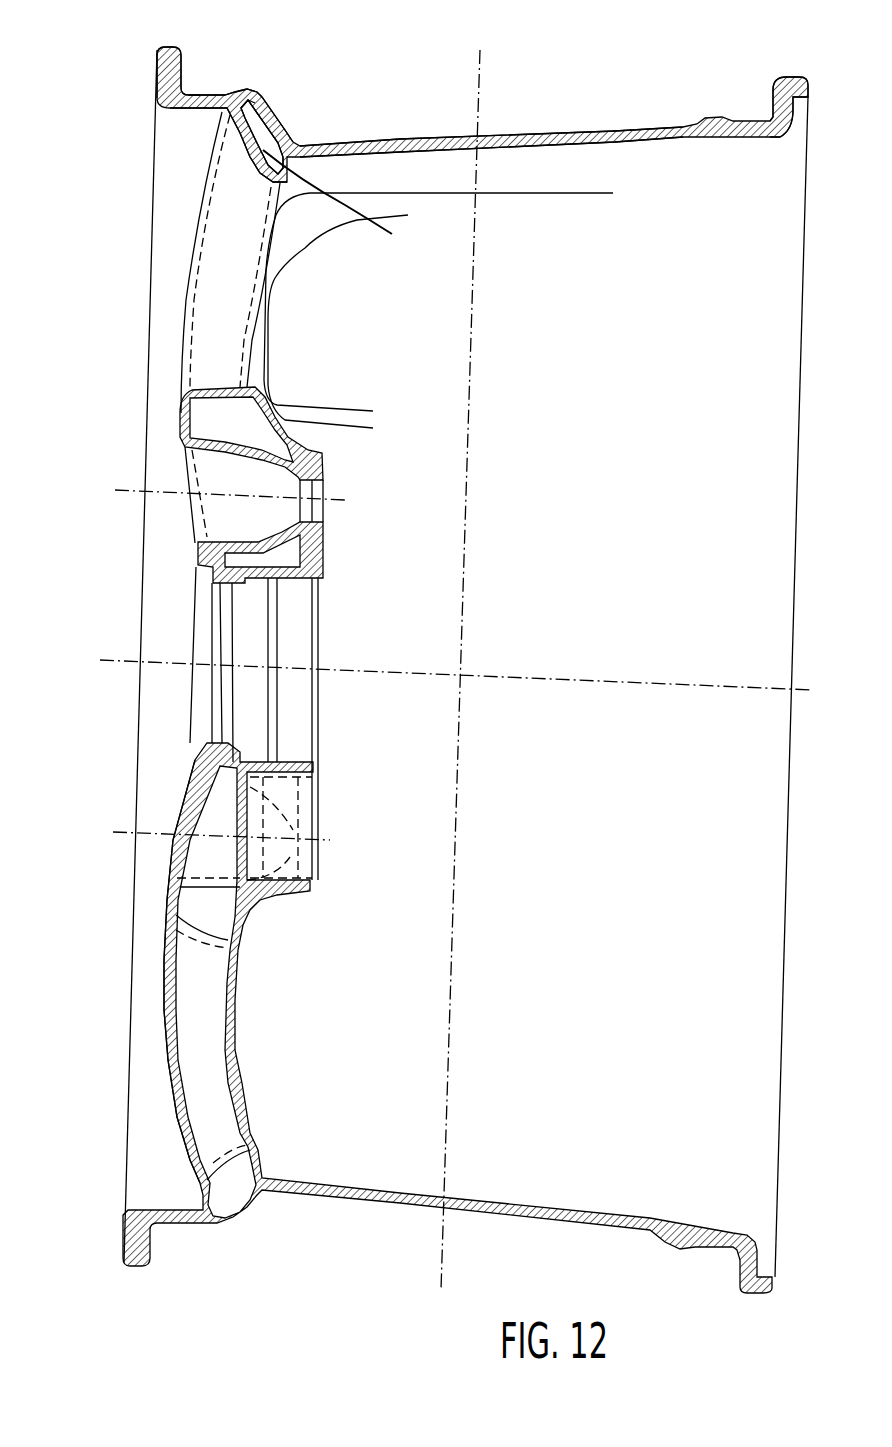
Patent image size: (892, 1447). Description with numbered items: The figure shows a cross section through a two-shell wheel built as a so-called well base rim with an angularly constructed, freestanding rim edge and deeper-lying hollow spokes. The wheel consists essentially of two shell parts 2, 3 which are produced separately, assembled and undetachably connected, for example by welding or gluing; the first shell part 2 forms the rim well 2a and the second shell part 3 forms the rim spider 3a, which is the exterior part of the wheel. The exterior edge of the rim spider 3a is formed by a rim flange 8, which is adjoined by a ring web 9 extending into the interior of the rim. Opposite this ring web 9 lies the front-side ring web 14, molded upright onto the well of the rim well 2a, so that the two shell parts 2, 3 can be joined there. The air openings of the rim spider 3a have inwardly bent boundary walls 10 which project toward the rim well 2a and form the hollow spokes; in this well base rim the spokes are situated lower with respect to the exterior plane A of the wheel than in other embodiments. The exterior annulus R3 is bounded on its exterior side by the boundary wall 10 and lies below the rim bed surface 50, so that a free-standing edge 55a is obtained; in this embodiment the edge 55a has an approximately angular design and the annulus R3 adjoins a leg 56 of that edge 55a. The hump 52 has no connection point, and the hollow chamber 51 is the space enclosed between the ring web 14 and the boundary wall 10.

The shell part 2 is at (549, 96).
The rim well 2a is at (615, 130).
The well surface 50 is at (422, 136).
The rim flange 8 is at (160, 48).
The leg 56 is at (199, 104).
The free-standing edge 55a is at (184, 113).
The hump 52 is at (253, 87).
The ring web 9 is at (238, 96).
The front-side ring web 14 is at (263, 100).
The hollow chamber 51 is at (286, 130).
The boundary wall 10 is at (247, 175).
The exterior annulus R3 is at (346, 206).
The exterior plane A is at (148, 342).
The shell part 3 is at (160, 873).
The rim spider 3a is at (166, 985).